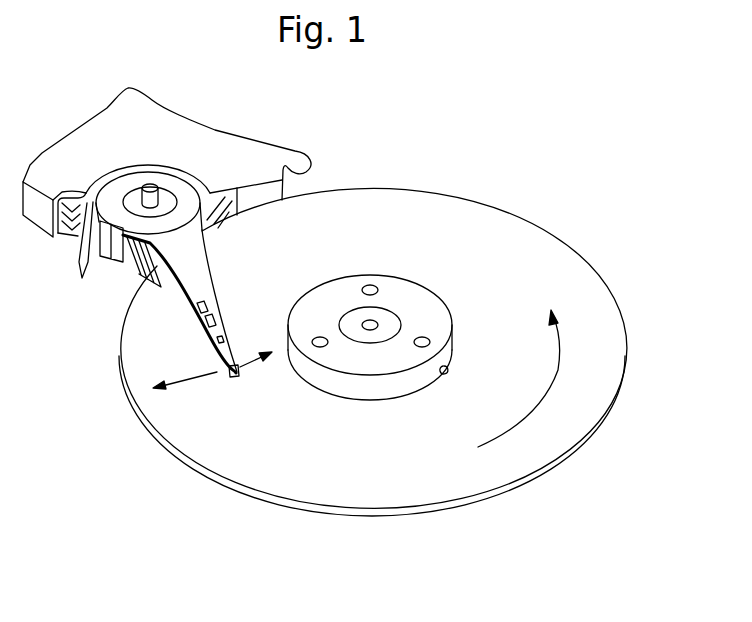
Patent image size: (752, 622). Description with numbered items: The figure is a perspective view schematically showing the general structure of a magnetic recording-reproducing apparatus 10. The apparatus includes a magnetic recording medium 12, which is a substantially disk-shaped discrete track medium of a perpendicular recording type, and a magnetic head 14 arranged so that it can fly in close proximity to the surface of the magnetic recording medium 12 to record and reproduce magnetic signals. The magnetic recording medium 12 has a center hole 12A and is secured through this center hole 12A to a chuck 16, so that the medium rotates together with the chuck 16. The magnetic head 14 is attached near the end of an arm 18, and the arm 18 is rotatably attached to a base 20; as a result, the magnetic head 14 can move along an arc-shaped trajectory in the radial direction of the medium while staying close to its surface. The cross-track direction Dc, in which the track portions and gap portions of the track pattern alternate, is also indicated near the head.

The magnetic recording-reproducing apparatus 10 is at (430, 156).
The magnetic recording medium 12 is at (497, 222).
The center hole 12A is at (444, 366).
The magnetic head 14 is at (233, 378).
The chuck 16 is at (362, 392).
The arm 18 is at (207, 331).
The base 20 is at (193, 152).
The cross-track direction Dc is at (200, 377).